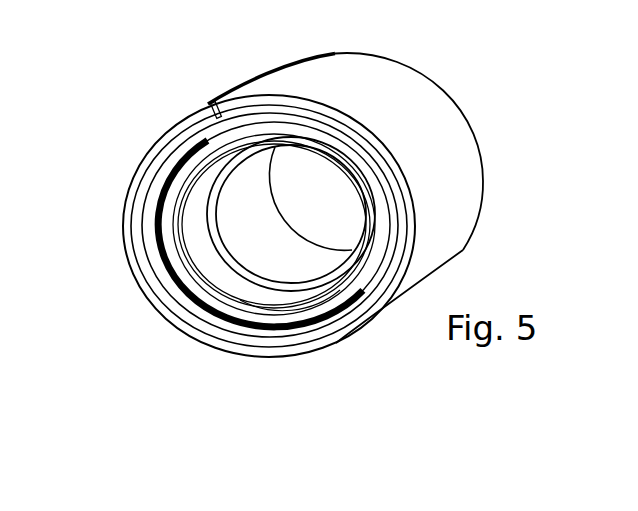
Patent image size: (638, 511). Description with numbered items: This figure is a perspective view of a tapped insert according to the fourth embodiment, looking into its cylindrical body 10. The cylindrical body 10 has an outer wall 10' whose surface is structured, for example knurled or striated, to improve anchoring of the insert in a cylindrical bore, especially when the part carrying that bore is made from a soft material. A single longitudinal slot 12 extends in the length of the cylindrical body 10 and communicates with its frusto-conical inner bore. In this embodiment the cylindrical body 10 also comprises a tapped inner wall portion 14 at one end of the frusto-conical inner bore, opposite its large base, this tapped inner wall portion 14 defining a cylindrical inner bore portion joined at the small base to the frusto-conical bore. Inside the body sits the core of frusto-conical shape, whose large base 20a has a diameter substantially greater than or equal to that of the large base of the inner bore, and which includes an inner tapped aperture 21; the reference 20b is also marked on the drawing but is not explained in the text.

The cylindrical body 10 is at (345, 206).
The outer wall 10' is at (409, 140).
The slot 12 is at (215, 103).
The tapped inner wall portion 14 is at (230, 323).
The inner tapped aperture 21 is at (307, 187).
The large base of the core 20a is at (303, 239).
The outer surface of mandrel 20b is at (288, 305).